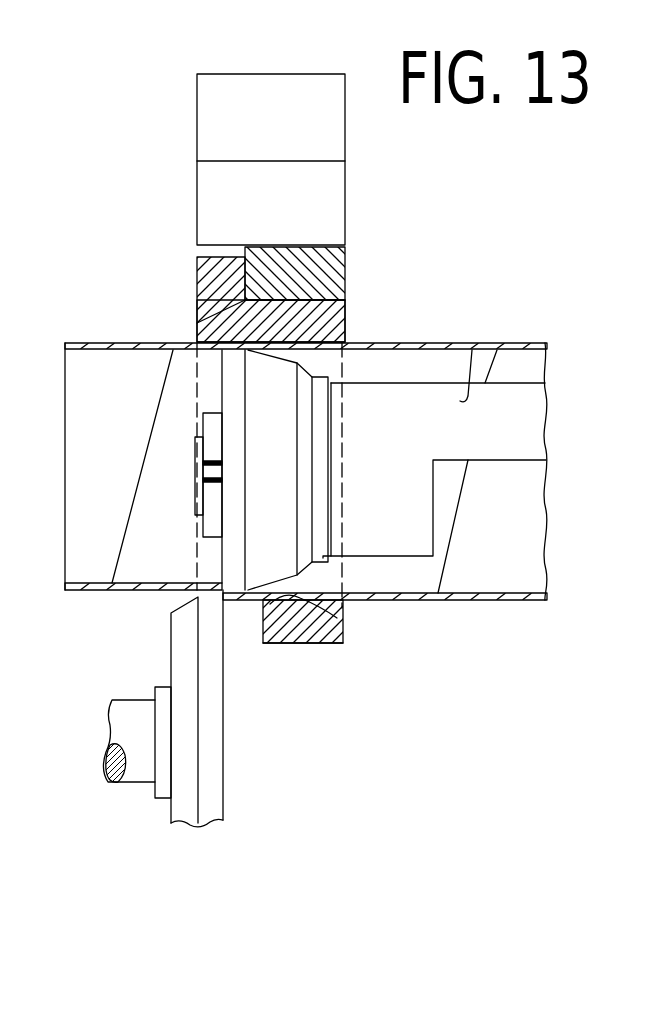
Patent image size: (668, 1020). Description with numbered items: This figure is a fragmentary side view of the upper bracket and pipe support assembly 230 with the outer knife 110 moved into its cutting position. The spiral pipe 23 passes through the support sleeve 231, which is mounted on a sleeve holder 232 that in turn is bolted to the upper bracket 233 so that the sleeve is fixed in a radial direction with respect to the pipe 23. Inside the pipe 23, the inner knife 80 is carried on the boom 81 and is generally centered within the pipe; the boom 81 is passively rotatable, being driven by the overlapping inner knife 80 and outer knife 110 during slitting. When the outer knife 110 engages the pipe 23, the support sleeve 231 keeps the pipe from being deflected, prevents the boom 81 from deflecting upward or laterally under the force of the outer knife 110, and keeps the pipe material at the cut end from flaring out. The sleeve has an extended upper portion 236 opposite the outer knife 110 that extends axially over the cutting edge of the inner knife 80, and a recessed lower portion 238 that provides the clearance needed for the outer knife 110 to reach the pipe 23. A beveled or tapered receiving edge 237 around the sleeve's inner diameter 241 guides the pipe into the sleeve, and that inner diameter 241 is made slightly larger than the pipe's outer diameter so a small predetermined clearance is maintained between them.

The spiral pipe 23 is at (96, 592).
The inner knife 80 is at (240, 556).
The boom 81 is at (483, 383).
The outer knife 110 is at (210, 698).
The pipe support assembly 230 is at (450, 284).
The support sleeve 231 is at (186, 297).
The sleeve holder 232 is at (337, 265).
The upper bracket 233 is at (322, 131).
The extended upper portion 236 is at (213, 327).
The tapered receiving edge 237 is at (345, 610).
The recessed lower portion 238 is at (297, 637).
The inner diameter 241 is at (342, 600).